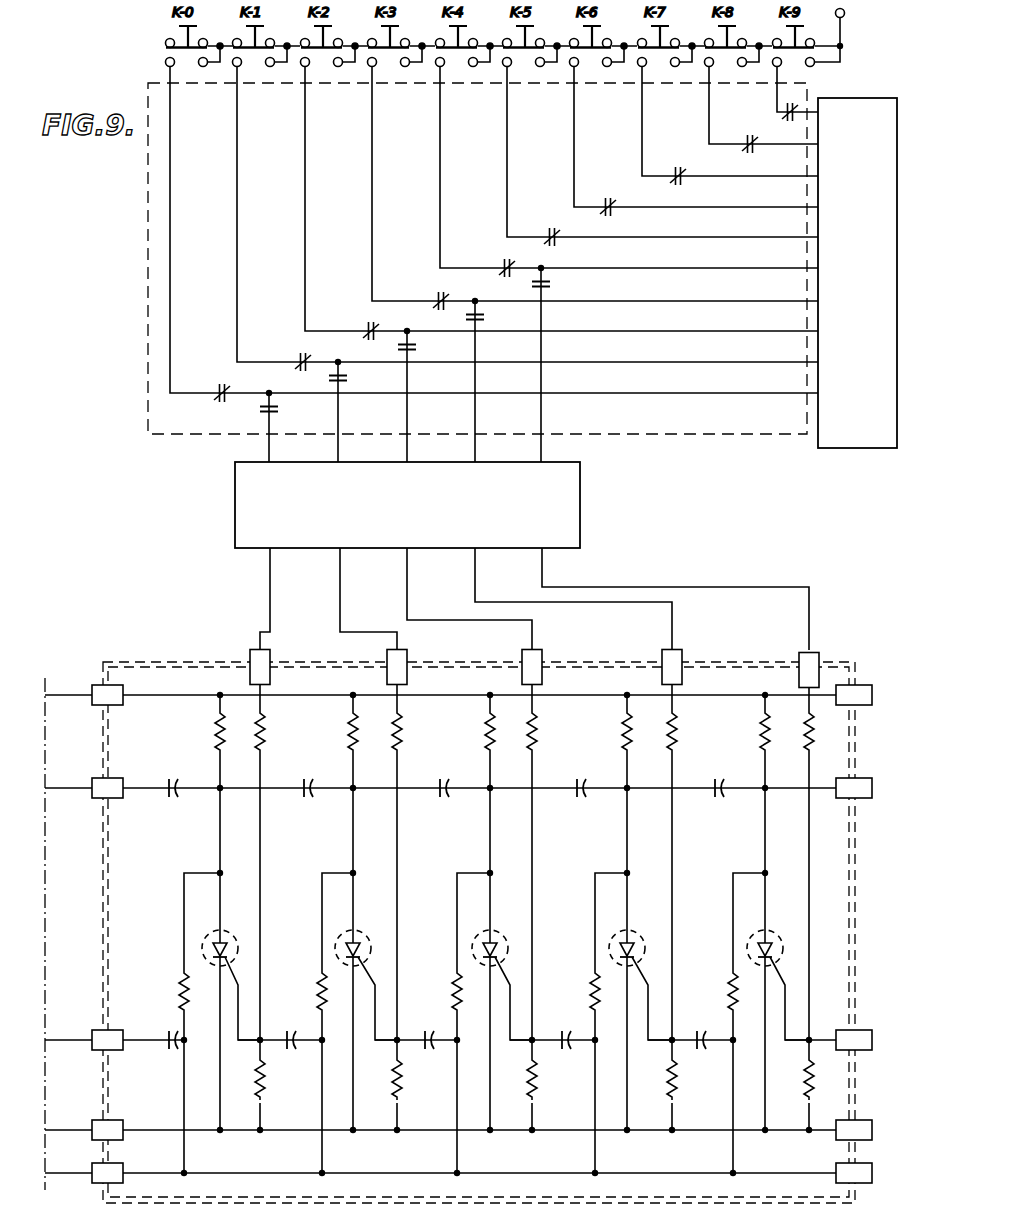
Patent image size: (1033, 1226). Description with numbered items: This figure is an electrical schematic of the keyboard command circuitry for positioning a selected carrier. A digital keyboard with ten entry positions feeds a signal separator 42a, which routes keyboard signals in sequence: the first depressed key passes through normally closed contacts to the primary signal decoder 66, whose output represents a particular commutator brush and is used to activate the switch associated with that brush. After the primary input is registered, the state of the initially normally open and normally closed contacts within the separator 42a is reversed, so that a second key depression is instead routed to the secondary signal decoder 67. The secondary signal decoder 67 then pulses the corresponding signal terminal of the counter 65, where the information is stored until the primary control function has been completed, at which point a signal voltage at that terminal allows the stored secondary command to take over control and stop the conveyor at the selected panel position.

The signal separator 42a is at (142, 341).
The primary signal decoder 66 is at (862, 452).
The secondary signal decoder 67 is at (230, 516).
The counter 65 is at (183, 626).